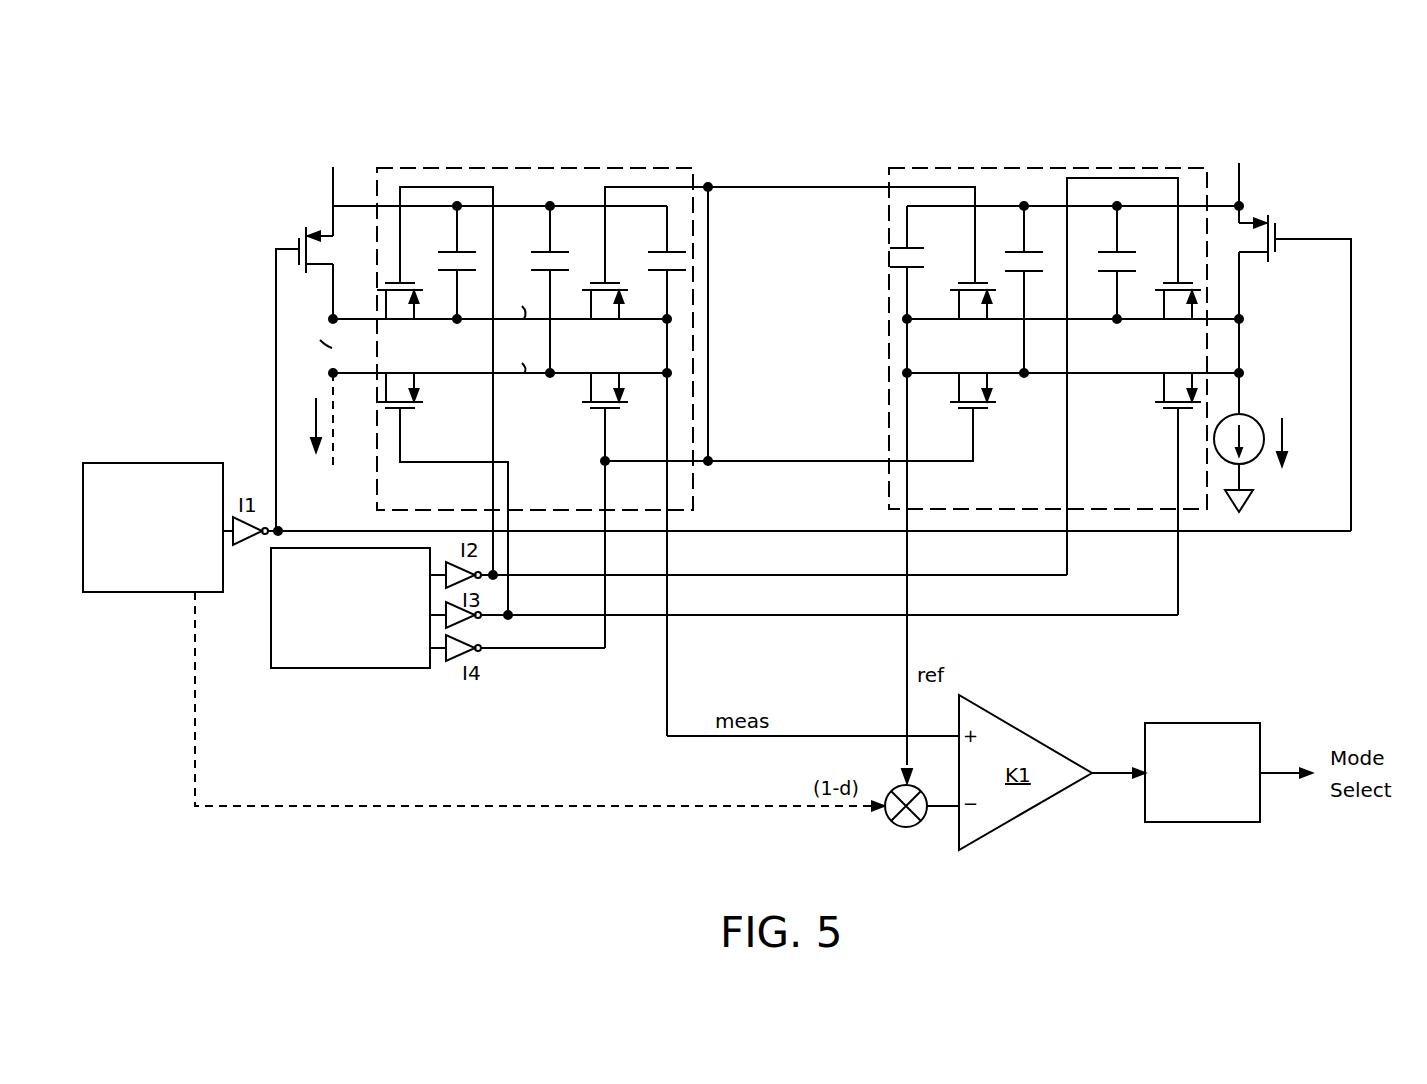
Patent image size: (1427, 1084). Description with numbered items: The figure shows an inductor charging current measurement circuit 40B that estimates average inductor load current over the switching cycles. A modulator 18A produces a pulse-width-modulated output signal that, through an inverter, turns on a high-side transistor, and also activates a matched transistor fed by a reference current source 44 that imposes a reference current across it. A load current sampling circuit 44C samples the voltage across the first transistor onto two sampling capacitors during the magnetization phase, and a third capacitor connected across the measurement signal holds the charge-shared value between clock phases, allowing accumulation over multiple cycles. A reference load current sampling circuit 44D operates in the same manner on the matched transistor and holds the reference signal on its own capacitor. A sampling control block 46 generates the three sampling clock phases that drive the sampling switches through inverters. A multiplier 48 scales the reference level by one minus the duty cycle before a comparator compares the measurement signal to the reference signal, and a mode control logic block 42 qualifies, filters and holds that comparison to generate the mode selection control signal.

The inductor charging current measurement circuit 40B is at (1105, 114).
The load current sampling circuit 44C is at (644, 168).
The reference load current sampling circuit 44D is at (918, 168).
The modulator 18A is at (177, 463).
The sampling control block 46 is at (271, 595).
The reference current source 44 is at (1250, 416).
The mode control logic block 42 is at (1224, 723).
The multiplier 48 is at (915, 784).